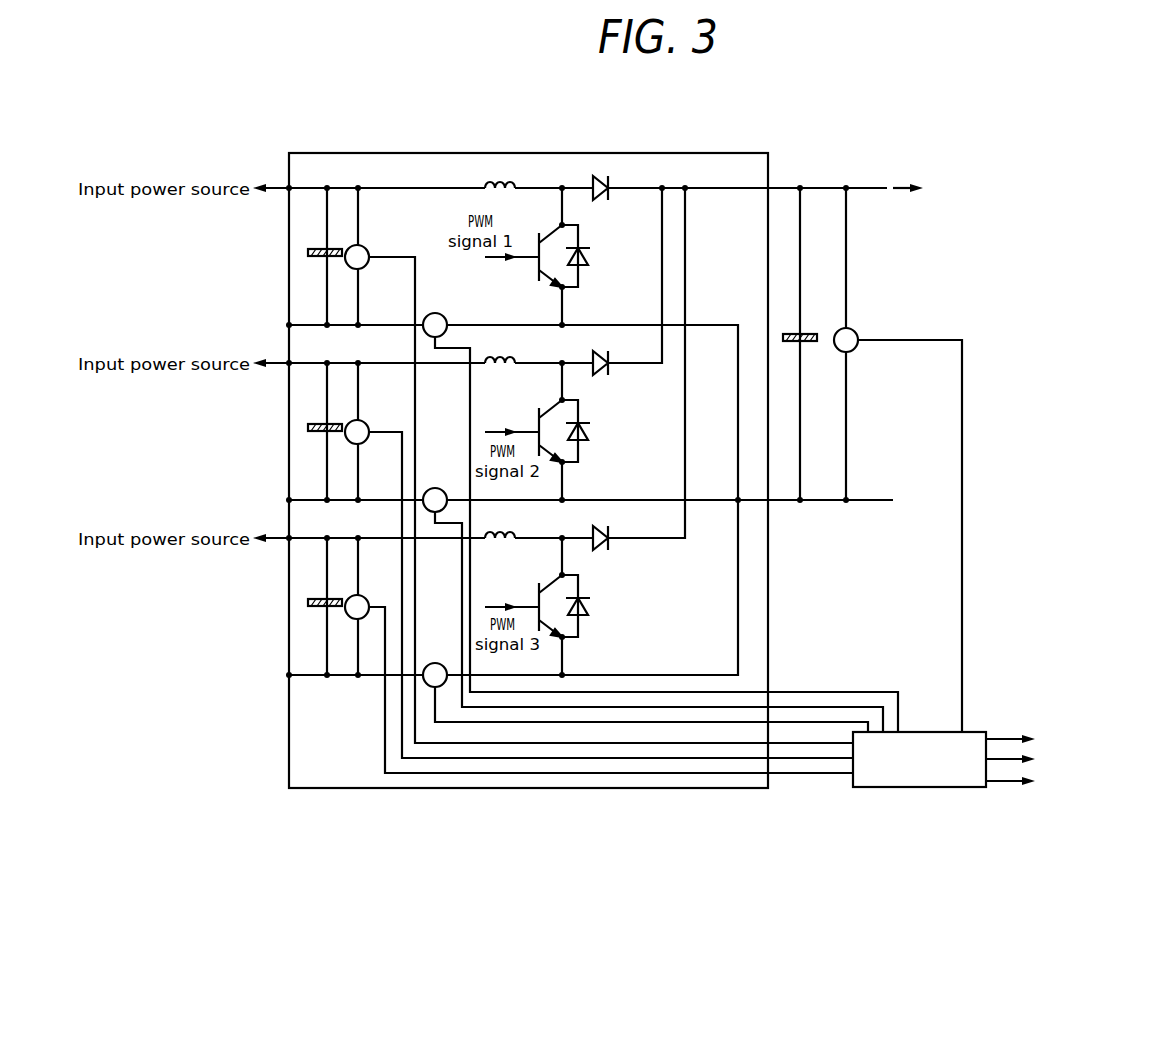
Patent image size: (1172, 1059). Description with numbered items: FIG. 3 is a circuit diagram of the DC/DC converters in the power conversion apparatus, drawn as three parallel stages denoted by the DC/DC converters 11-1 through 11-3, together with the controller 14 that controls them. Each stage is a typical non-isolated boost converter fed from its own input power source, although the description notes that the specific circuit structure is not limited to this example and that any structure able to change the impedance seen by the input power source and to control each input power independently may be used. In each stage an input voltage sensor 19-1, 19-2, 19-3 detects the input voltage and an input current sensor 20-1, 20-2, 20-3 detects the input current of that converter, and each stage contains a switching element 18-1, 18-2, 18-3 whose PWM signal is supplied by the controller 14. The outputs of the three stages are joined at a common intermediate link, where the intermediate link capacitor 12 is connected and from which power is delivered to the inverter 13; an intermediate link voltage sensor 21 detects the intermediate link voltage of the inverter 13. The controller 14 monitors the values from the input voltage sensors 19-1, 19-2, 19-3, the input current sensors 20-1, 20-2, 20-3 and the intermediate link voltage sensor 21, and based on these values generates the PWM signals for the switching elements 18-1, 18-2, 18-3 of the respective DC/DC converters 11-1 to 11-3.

The DC/DC converter 11-1 is at (559, 457).
The DC/DC converter 11-3 is at (708, 153).
The intermediate link capacitor 12 is at (805, 333).
The inverter 13 is at (957, 189).
The controller 14 is at (975, 732).
The switching element 18-1 is at (547, 237).
The switching element 18-2 is at (553, 411).
The switching element 18-3 is at (553, 582).
The input voltage sensor 19-1 is at (366, 246).
The input voltage sensor 19-2 is at (366, 421).
The input voltage sensor 19-3 is at (380, 583).
The input current sensor 20-1 is at (455, 303).
The input current sensor 20-2 is at (455, 478).
The input current sensor 20-3 is at (455, 653).
The intermediate link voltage sensor 21 is at (857, 332).